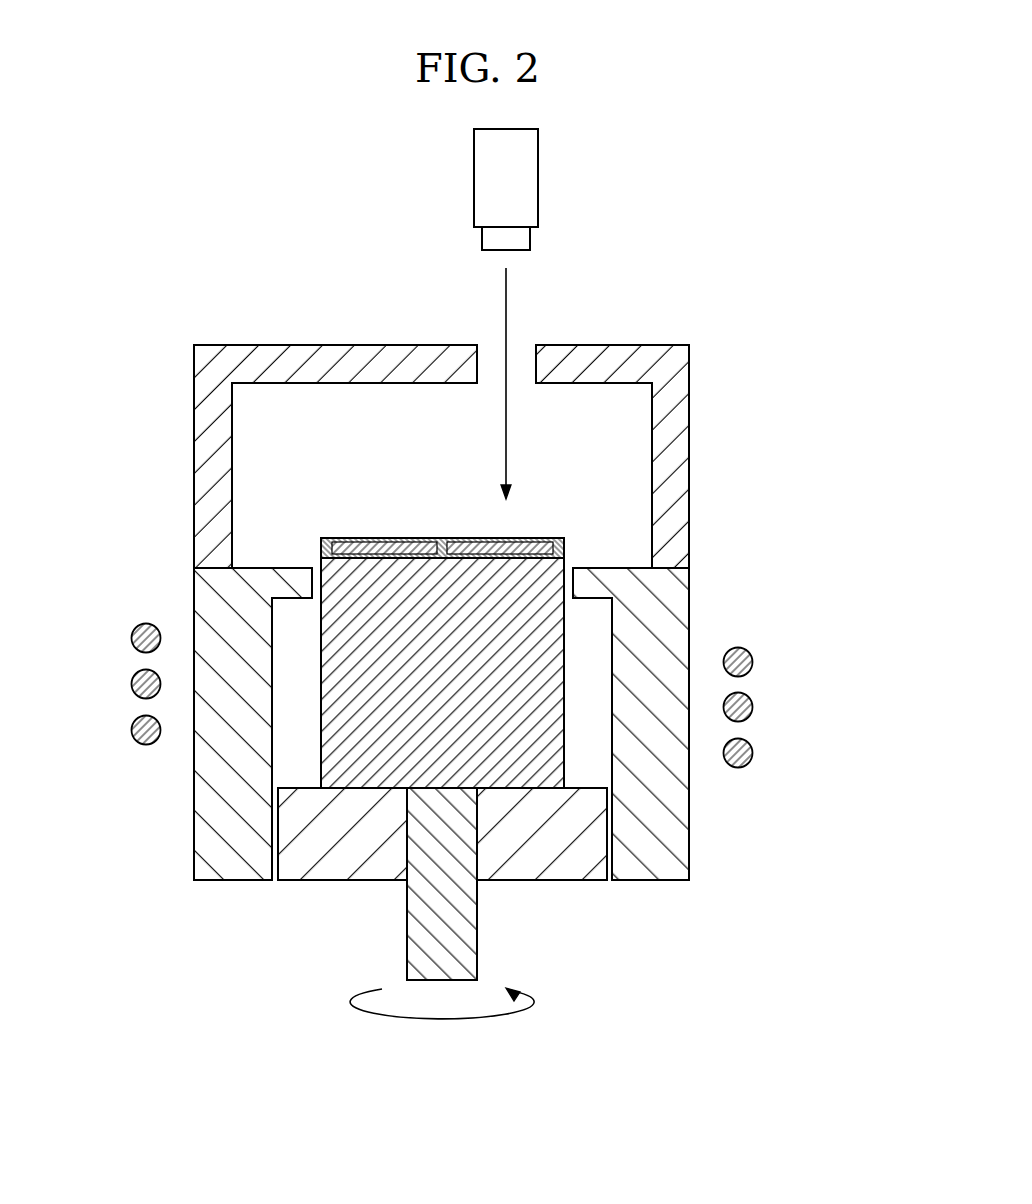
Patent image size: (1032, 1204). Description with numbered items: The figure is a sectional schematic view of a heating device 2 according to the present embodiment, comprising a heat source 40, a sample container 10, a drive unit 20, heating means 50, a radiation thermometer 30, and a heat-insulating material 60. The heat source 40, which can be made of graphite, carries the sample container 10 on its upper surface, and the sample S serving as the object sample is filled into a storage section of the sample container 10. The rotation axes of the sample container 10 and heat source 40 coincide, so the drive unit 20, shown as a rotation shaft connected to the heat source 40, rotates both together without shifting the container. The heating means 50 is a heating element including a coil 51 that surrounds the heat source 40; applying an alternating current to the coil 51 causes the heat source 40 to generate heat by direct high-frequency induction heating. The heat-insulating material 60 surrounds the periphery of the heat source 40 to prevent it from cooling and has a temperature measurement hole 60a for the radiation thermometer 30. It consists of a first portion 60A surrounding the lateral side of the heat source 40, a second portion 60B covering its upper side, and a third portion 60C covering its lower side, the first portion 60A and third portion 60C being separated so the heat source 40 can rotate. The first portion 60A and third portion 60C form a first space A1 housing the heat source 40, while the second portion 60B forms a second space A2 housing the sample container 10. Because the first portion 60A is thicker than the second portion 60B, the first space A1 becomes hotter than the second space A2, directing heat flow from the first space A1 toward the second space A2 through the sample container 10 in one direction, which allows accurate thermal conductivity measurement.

The heating device 2 is at (746, 244).
The sample container 10 is at (398, 538).
The drive unit 20 is at (455, 945).
The radiation thermometer 30 is at (521, 189).
The heat source 40 is at (363, 800).
The heating means 50 is at (130, 620).
The coil 51 is at (753, 662).
The heat-insulating material 60 is at (512, 642).
The temperature measurement hole 60a is at (536, 362).
The first portion 60A is at (657, 623).
The second portion 60B is at (672, 397).
The third portion 60C is at (573, 868).
The first space A1 is at (588, 755).
The second space A2 is at (617, 521).
The sample S is at (505, 545).